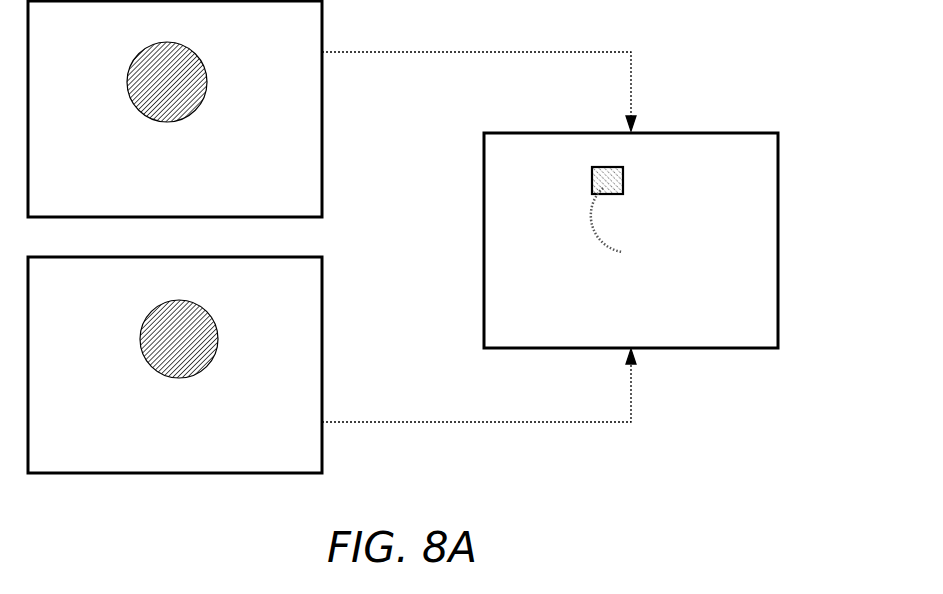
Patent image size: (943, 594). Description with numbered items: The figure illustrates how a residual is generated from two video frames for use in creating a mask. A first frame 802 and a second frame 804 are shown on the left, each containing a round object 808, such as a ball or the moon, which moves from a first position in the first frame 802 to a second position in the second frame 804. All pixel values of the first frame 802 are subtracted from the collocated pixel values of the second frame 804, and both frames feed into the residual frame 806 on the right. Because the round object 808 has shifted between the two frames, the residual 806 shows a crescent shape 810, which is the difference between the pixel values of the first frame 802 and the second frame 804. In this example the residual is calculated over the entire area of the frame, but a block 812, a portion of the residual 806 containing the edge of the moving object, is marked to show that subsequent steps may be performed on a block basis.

The first frame 802 is at (323, 105).
The second frame 804 is at (323, 343).
The residual frame 806 is at (779, 238).
The round object 808 is at (206, 66).
The crescent shape 810 is at (600, 228).
The block 812 is at (623, 170).